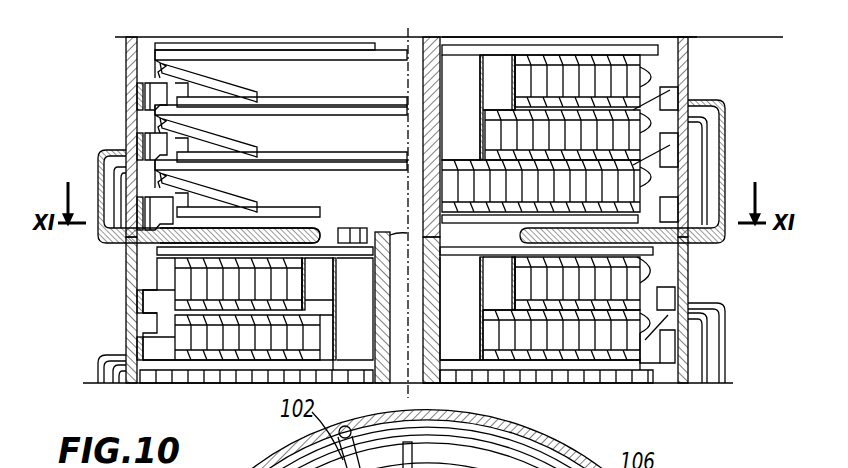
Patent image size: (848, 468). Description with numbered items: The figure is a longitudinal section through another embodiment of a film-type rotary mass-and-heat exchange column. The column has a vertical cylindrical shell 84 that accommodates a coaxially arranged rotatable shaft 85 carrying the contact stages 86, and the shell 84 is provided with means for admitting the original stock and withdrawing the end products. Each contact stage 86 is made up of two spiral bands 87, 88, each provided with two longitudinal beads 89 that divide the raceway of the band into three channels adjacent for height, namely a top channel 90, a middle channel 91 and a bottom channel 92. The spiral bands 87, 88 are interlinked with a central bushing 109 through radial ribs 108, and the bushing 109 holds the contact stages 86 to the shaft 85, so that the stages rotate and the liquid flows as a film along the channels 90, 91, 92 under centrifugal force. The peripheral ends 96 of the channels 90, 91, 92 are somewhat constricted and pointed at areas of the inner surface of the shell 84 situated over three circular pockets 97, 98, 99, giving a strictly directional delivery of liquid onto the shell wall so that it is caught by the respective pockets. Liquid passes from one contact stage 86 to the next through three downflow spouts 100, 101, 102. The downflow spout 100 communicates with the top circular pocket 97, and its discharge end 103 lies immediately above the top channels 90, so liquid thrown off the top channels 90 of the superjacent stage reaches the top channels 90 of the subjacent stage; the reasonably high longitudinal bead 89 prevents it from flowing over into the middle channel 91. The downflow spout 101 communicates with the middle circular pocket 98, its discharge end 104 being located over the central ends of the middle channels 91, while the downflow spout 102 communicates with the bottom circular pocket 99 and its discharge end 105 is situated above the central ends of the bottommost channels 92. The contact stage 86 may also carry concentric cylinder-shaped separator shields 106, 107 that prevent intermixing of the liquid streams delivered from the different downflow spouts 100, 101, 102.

The vertical cylindrical shell 84 is at (125, 282).
The rotatable shaft 85 is at (423, 130).
The contact stage 86 is at (566, 41).
The spiral band 87 is at (645, 345).
The spiral band 88 is at (660, 330).
The longitudinal bead 89 is at (670, 90).
The top channel 90 is at (238, 72).
The middle channel 91 is at (264, 128).
The bottom channel 92 is at (272, 178).
The peripheral end 96 is at (158, 66).
The top circular pocket 97 is at (145, 95).
The middle circular pocket 98 is at (147, 143).
The bottom circular pocket 99 is at (117, 246).
The downflow spout 100 is at (697, 243).
The downflow spout 101 is at (279, 230).
The downflow spout 102 is at (357, 225).
The discharge end 103 is at (523, 247).
The discharge end 104 is at (312, 262).
The discharge end 105 is at (355, 240).
The separator shield 106 is at (480, 93).
The separator shield 107 is at (510, 68).
The radial rib 108 is at (627, 50).
The central bushing 109 is at (443, 387).